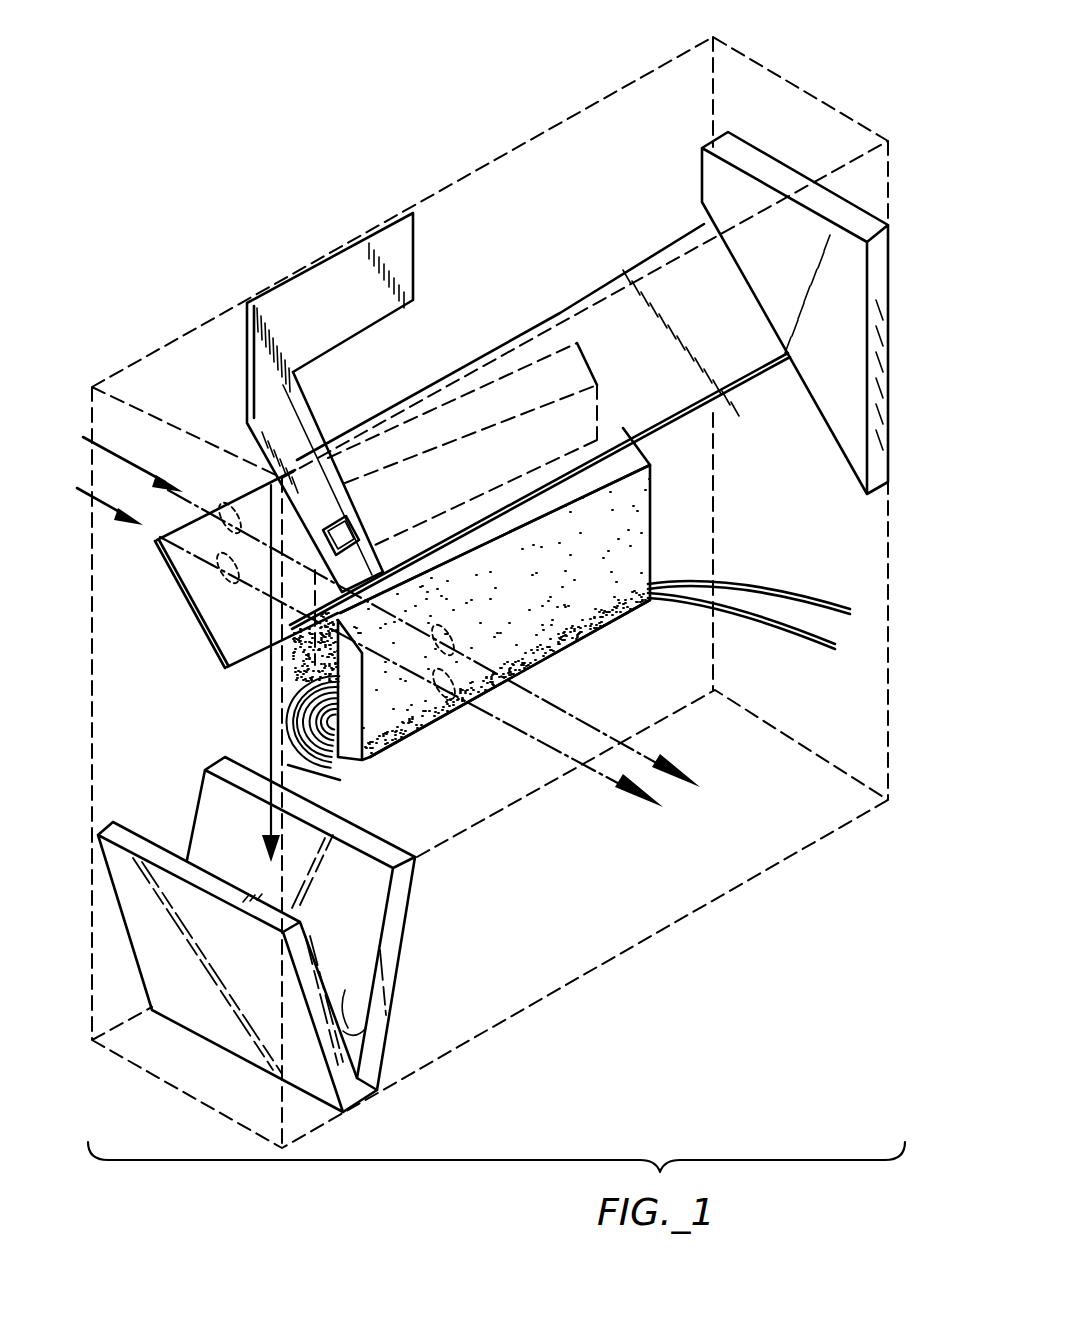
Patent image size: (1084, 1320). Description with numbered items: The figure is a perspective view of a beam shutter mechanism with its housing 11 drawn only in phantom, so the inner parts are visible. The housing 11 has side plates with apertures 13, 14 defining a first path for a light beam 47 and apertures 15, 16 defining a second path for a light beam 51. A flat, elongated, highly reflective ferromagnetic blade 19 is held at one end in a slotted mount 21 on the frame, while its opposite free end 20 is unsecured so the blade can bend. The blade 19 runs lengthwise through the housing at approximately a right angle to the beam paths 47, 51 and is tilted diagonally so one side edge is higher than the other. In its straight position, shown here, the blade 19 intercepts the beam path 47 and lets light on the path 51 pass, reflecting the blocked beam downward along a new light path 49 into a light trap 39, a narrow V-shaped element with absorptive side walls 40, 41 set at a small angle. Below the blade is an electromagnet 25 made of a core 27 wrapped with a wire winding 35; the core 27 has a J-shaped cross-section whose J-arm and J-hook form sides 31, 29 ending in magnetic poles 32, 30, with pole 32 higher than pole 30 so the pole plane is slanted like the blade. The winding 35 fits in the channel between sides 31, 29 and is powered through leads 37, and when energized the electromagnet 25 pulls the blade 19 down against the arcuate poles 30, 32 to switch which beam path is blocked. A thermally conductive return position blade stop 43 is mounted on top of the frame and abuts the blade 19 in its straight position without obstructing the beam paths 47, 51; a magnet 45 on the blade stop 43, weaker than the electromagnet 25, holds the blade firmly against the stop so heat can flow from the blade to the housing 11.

The housing 11 is at (518, 153).
The aperture 13 is at (233, 500).
The aperture 14 is at (452, 626).
The aperture 15 is at (232, 586).
The aperture 16 is at (452, 700).
The ferromagnetic blade 19 is at (390, 418).
The free end 20 is at (212, 652).
The slotted mount 21 is at (845, 435).
The electromagnet 25 is at (668, 496).
The core 27 is at (598, 632).
The J-hook side 29 is at (372, 752).
The magnetic pole 30 is at (480, 566).
The J-arm side 31 is at (292, 688).
The magnetic pole 32 is at (458, 461).
The wire winding 35 is at (322, 772).
The leads 37 is at (772, 590).
The light trap 39 is at (313, 934).
The absorptive side wall 40 is at (394, 931).
The absorptive side wall 41 is at (302, 932).
The return position blade stop 43 is at (298, 416).
The magnet 45 is at (358, 512).
The light beam path 47 is at (582, 718).
The light path 49 is at (270, 727).
The light beam path 51 is at (610, 783).